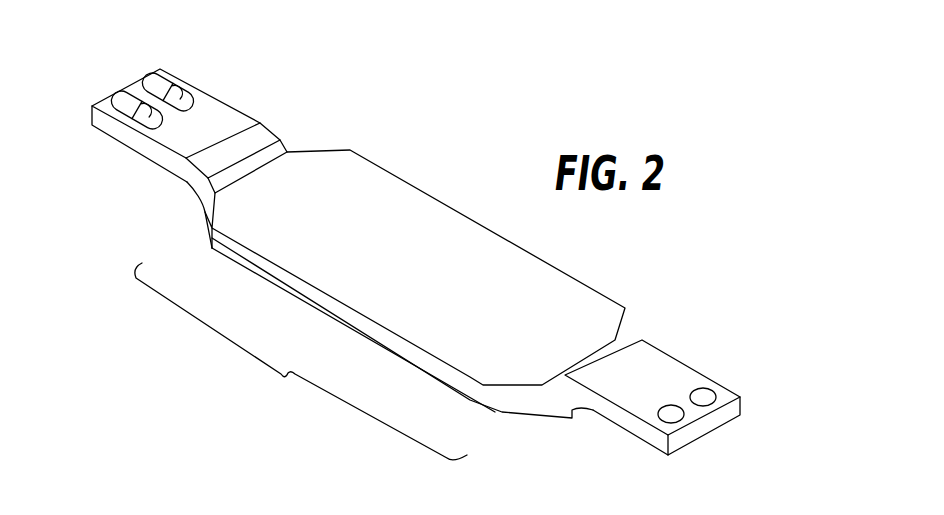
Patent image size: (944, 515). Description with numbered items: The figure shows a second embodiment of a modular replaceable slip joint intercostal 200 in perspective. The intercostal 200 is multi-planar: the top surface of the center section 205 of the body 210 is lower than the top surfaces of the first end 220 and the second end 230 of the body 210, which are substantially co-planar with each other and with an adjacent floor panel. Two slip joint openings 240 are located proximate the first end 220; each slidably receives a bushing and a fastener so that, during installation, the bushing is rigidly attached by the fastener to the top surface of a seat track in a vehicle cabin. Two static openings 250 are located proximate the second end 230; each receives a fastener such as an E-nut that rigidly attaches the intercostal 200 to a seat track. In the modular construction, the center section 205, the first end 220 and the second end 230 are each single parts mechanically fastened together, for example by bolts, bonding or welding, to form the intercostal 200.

The modular replaceable slip joint intercostal 200 is at (734, 247).
The center section 205 is at (301, 361).
The body 210 is at (417, 210).
The first end 220 is at (220, 117).
The second end 230 is at (657, 370).
The slip joint openings 240 is at (123, 95).
The static openings 250 is at (705, 387).